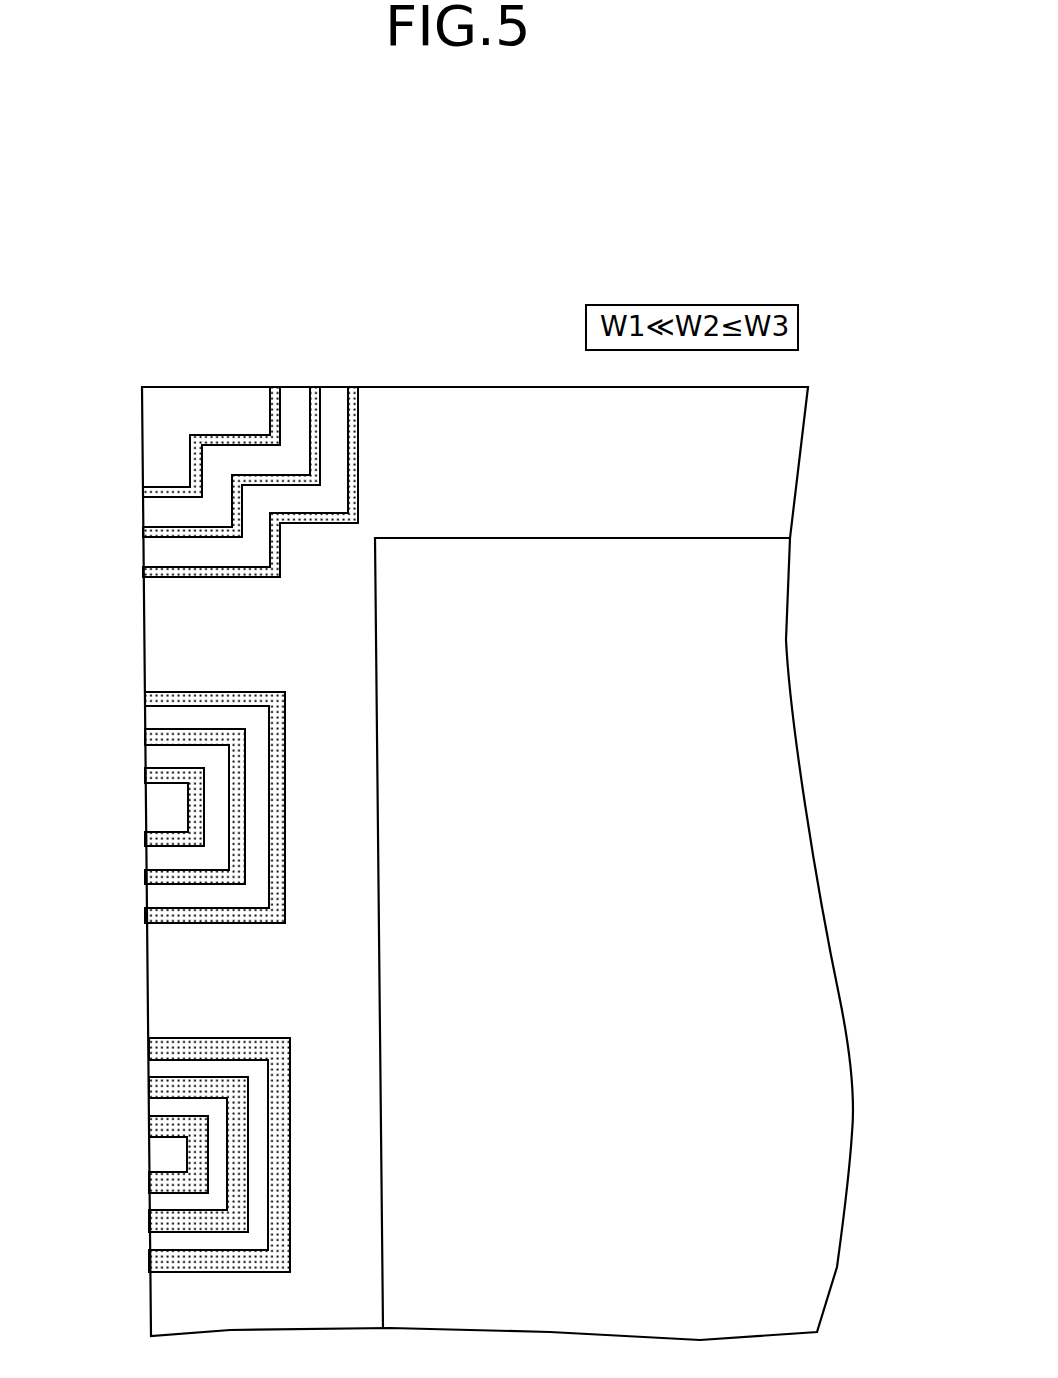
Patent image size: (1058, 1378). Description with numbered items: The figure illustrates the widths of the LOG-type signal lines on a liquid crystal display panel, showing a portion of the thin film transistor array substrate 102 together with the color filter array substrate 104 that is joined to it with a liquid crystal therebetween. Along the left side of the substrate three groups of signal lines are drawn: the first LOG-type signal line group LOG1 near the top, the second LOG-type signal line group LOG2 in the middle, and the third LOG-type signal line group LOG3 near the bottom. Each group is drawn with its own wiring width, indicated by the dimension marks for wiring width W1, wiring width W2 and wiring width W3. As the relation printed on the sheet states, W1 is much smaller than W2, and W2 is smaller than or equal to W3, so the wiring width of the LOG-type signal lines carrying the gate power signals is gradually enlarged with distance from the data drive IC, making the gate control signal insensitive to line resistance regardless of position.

The thin film transistor array substrate 102 is at (790, 512).
The color filter array substrate 104 is at (785, 612).
The first LOG-type signal line group LOG1 is at (143, 493).
The second LOG-type signal line group LOG2 is at (146, 839).
The third LOG-type signal line group LOG3 is at (150, 1184).
The wiring width of the first LOG-type signal line group W1 is at (117, 517).
The wiring width of the second LOG-type signal line group W2 is at (121, 859).
The wiring width of the third LOG-type signal line group W3 is at (124, 1202).